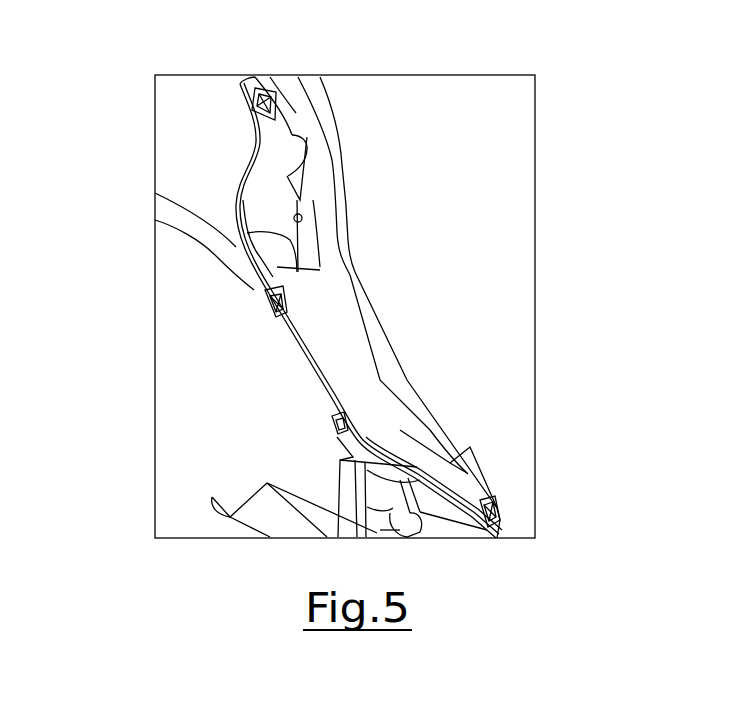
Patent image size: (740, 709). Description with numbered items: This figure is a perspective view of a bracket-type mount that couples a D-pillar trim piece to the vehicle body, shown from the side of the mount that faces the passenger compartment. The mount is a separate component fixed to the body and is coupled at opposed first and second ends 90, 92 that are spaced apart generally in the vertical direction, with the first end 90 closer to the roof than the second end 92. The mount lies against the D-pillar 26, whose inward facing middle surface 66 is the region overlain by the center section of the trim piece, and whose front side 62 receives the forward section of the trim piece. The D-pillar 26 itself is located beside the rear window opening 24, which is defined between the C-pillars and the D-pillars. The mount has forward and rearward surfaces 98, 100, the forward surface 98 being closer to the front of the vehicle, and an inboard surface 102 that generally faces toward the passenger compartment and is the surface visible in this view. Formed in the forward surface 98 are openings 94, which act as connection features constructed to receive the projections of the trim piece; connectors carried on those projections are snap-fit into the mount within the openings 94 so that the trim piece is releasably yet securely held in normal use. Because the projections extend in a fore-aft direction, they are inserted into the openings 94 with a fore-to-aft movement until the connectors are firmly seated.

The rear window opening 24 is at (177, 357).
The D-pillar 26 is at (535, 217).
The front side 62 is at (208, 253).
The middle surface 66 is at (512, 313).
The first end 90 is at (245, 84).
The second end 92 is at (497, 520).
The openings 94 is at (270, 303).
The forward surface 98 is at (328, 393).
The rearward surface 100 is at (367, 353).
The inboard surface 102 is at (325, 313).